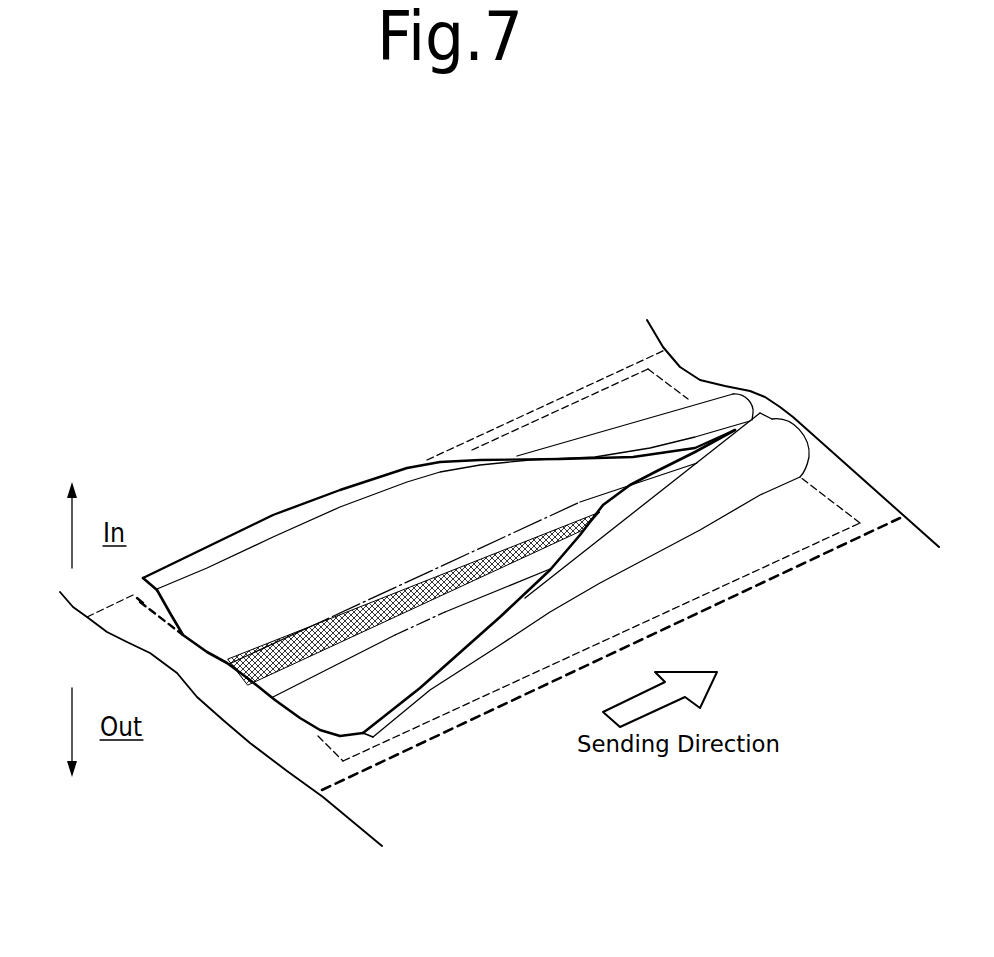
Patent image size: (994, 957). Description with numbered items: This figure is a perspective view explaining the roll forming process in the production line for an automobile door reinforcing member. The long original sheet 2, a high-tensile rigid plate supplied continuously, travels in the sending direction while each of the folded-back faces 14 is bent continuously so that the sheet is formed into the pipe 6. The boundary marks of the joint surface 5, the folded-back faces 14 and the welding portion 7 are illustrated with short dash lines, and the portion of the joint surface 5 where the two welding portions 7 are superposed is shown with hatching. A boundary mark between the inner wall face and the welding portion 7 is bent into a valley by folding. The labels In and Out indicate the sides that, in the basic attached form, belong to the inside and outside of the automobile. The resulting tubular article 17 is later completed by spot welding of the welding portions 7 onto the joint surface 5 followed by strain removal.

The original sheet 2 is at (282, 712).
The joint surface 5 is at (427, 577).
The pipe 6 is at (723, 397).
The welding portion 7 is at (482, 463).
The folded-back face 14 is at (306, 575).
The tubular article 17 is at (660, 407).